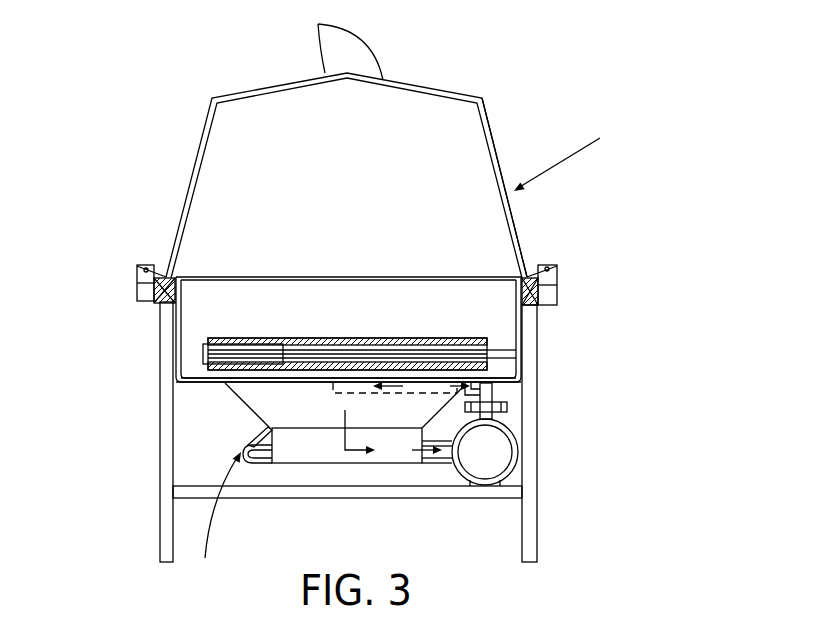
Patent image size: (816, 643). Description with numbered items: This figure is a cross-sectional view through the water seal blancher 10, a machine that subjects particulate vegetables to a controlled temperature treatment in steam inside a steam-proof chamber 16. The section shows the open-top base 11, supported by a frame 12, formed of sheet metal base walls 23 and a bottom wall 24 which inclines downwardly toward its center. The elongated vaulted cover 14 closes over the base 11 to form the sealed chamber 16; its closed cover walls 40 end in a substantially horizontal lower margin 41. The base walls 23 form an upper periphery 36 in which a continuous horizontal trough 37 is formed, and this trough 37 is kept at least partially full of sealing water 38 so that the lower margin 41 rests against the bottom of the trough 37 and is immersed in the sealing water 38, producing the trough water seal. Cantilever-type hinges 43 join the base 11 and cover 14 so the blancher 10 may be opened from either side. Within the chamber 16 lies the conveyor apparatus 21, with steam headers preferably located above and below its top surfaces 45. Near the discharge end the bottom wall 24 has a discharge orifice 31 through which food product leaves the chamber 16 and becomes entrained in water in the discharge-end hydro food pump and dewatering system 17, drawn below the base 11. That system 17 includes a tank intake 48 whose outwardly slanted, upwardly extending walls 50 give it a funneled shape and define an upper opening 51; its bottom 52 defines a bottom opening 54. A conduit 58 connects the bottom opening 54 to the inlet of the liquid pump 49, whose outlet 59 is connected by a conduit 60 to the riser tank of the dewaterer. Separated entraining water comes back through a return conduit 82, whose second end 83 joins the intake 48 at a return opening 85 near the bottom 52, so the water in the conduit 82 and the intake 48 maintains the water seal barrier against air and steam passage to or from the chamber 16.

The water seal blancher 10 is at (574, 156).
The base 11 is at (185, 332).
The frame 12 is at (529, 449).
The vaulted cover 14 is at (488, 118).
The steam proof chamber 16 is at (519, 234).
The discharge end hydro food pump and dewatering system 17 is at (218, 521).
The conveyor apparatus 21 is at (400, 338).
The base walls 23 is at (168, 338).
The bottom wall 24 is at (177, 368).
The discharge orifice 31 is at (227, 385).
The upper periphery 36 is at (181, 282).
The trough 37 is at (153, 283).
The sealing water 38 is at (170, 276).
The closed cover walls 40 is at (560, 122).
The lower margin 41 is at (162, 305).
The cantilever-type hinges 43 is at (152, 263).
The top surfaces 45 is at (335, 338).
The tank intake 48 is at (266, 426).
The liquid pump 49 is at (518, 465).
The upwardly extending walls 50 is at (312, 419).
The upper opening 51 is at (281, 338).
The bottom 52 is at (318, 465).
The bottom opening 54 is at (420, 466).
The conduit 58 is at (450, 440).
The outlet 59 is at (505, 409).
The conduit 60 is at (493, 395).
The return conduit 82 is at (253, 463).
The second end 83 is at (267, 464).
The return opening 85 is at (265, 443).